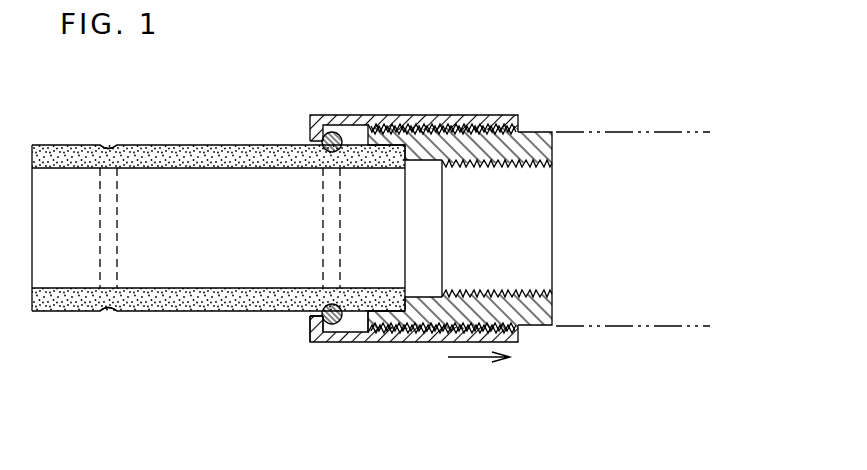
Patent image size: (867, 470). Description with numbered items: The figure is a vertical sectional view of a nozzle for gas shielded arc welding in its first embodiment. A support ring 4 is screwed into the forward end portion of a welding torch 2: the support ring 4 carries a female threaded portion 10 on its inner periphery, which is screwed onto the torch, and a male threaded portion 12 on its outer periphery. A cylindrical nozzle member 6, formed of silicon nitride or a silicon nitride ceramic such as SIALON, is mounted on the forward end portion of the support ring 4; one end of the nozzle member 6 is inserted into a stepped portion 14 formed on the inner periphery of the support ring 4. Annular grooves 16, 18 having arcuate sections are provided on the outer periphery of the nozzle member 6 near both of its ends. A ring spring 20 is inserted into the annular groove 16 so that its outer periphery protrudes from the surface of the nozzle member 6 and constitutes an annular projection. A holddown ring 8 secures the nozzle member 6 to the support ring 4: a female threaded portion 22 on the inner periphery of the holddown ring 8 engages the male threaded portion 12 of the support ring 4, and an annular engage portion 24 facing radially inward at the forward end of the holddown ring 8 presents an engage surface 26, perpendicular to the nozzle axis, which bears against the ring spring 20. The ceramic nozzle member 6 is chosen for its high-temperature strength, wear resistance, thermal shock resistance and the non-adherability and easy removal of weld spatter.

The welding torch 2 is at (628, 318).
The support ring 4 is at (536, 132).
The cylindrical nozzle member 6 is at (201, 155).
The holddown ring 8 is at (343, 116).
The female threaded portion 10 is at (492, 168).
The male threaded portion 12 is at (410, 127).
The stepped portion 14 is at (380, 312).
The annular groove 16 is at (322, 320).
The annular groove 18 is at (107, 312).
The ring spring 20 is at (322, 138).
The female threaded portion 22 is at (461, 127).
The annular engage portion 24 is at (310, 329).
The engage surface 26 is at (332, 327).